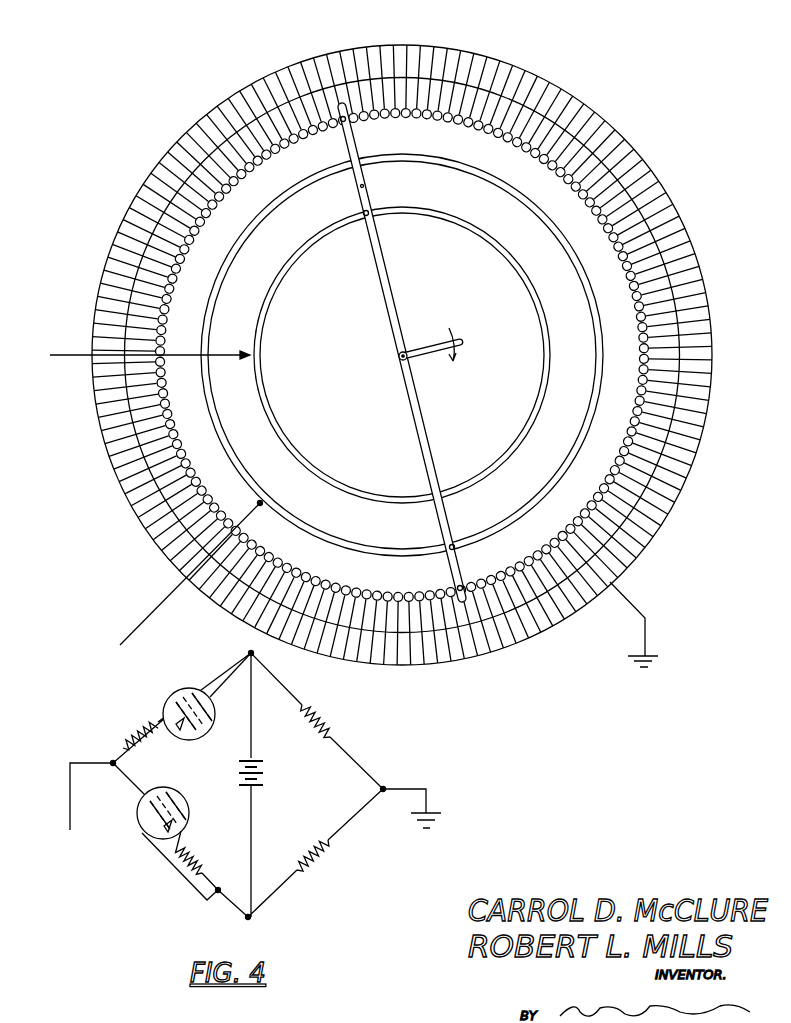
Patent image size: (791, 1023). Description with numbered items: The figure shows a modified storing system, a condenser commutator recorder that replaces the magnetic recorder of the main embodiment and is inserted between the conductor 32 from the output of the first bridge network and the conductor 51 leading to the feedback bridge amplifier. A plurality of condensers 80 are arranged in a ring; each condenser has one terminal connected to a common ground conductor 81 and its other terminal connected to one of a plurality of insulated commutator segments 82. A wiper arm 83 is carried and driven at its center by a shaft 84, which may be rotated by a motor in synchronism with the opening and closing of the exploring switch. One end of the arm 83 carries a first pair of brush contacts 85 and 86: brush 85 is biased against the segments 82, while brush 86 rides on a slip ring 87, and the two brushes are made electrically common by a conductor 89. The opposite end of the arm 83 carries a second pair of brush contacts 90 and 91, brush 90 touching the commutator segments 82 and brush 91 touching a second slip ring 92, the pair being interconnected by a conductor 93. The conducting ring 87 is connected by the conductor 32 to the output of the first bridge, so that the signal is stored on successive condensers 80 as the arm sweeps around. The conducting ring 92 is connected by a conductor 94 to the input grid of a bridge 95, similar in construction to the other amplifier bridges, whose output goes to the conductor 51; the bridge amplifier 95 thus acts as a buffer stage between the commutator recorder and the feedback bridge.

The condensers 80 is at (323, 73).
The common ground conductor 81 is at (388, 45).
The insulated commutator segments 82 is at (448, 120).
The wiper arm 83 is at (390, 283).
The shaft 84 is at (398, 360).
The brush contact 85 is at (342, 125).
The brush contact 86 is at (367, 215).
The slip ring 87 is at (468, 227).
The conductor 89 is at (362, 185).
The brush contact 90 is at (463, 588).
The brush contact 91 is at (455, 545).
The second slip ring 92 is at (540, 497).
The conductor 93 is at (456, 570).
The conductor 94 is at (150, 620).
The bridge 95 is at (255, 785).
The conductor 32 is at (84, 362).
The conductor 51 is at (62, 806).